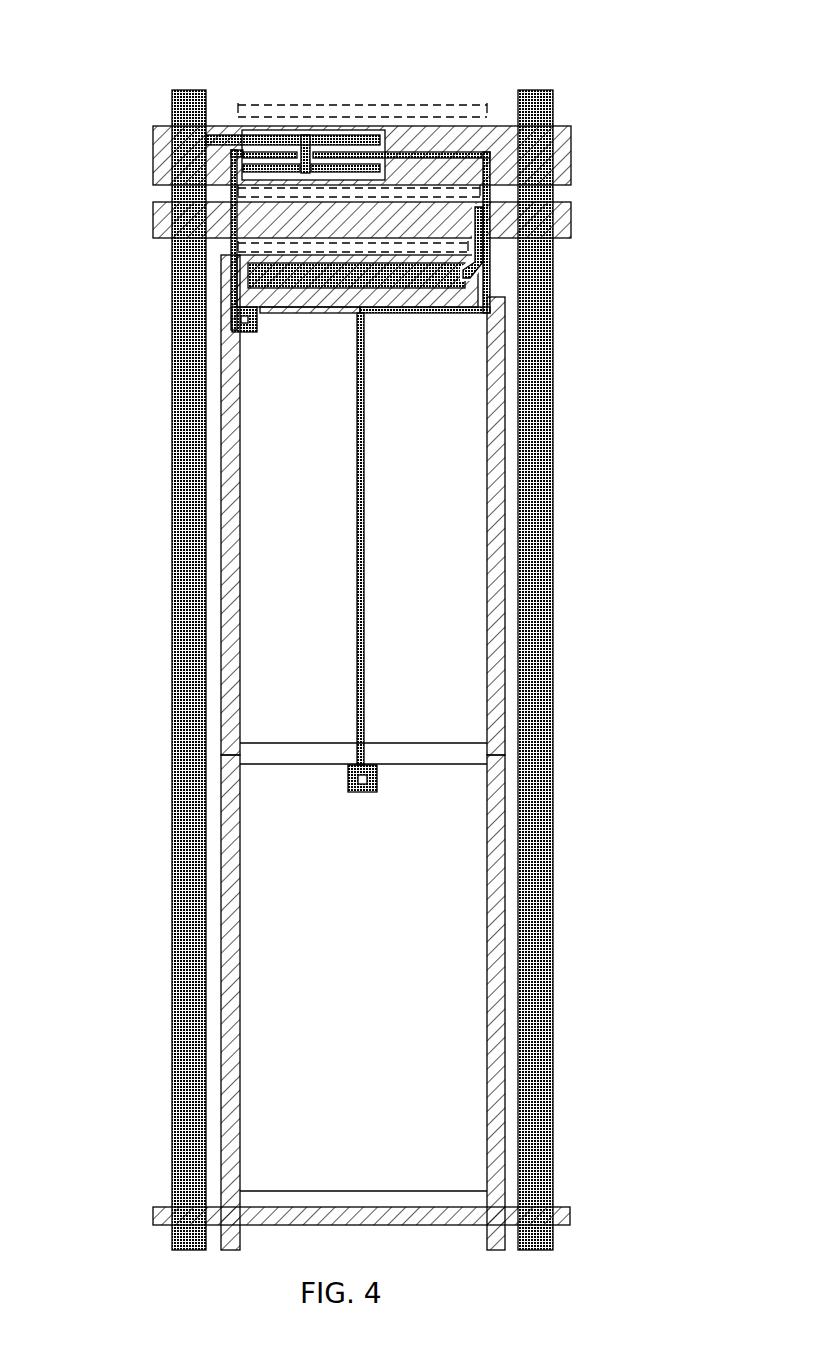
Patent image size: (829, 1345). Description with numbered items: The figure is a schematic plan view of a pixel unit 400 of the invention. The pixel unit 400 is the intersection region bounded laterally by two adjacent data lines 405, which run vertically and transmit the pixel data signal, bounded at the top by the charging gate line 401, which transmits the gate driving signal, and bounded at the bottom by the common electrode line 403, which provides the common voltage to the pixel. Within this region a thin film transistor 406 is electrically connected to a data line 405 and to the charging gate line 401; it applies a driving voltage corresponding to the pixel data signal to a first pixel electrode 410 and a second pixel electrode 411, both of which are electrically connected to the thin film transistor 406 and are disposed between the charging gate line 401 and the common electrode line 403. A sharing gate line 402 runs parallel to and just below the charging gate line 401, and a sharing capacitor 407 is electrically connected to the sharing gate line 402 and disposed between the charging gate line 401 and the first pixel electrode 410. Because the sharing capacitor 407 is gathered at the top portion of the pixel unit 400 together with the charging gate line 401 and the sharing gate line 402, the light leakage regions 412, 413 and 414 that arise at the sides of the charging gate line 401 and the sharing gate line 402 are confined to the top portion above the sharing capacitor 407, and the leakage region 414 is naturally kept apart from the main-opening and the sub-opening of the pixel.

The pixel unit 400 is at (92, 75).
The charging gate line 401 is at (572, 150).
The sharing gate line 402 is at (572, 215).
The common electrode line 403 is at (560, 1215).
The data line 405 is at (185, 92).
The thin film transistor 406 is at (305, 130).
The sharing capacitor 407 is at (467, 270).
The first pixel electrode 410 is at (470, 668).
The second pixel electrode 411 is at (470, 887).
The light leakage region 412 is at (238, 108).
The light leakage region 413 is at (238, 190).
The light leakage region 414 is at (238, 247).